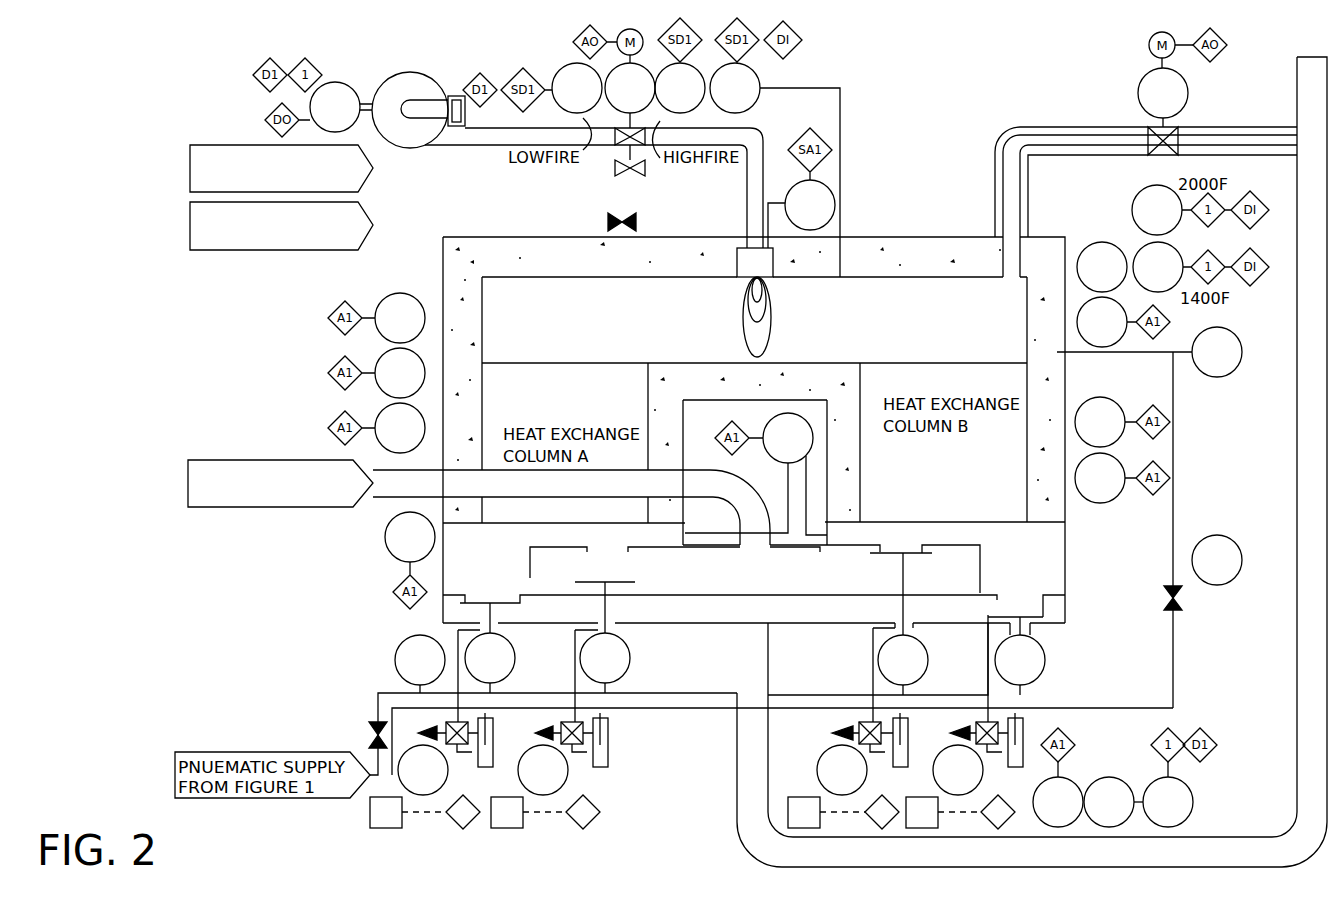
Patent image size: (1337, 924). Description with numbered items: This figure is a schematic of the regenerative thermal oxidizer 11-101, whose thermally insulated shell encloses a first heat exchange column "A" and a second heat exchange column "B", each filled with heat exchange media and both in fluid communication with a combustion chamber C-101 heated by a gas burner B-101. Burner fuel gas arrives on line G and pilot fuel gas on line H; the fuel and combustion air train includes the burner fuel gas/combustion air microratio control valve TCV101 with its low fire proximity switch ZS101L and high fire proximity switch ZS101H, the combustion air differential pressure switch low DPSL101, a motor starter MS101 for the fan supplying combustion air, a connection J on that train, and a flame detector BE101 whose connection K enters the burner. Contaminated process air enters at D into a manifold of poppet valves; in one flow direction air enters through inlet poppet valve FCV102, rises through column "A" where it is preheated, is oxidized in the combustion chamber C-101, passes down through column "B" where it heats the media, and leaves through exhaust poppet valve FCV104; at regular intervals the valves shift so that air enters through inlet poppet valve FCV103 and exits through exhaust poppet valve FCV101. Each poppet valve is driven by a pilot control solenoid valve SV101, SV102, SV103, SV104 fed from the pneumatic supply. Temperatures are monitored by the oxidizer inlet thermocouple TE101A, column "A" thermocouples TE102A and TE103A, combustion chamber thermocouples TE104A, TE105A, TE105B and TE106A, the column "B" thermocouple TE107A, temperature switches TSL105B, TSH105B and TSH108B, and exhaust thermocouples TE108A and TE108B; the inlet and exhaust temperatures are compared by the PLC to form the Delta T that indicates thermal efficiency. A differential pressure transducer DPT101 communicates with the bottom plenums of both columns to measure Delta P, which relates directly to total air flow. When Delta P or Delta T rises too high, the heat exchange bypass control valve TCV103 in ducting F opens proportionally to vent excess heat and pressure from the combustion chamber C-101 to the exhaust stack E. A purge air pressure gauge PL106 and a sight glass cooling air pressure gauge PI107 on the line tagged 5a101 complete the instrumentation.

The oxidizer 11-101 is at (754, 384).
The oxidizer burner B-101 is at (680, 262).
The combustion chamber C-101 is at (853, 317).
The burner fuel gas line from figure 1 G is at (615, 168).
The pilot fuel gas line from figure 1 H is at (747, 222).
The process air line from figure 1 D is at (479, 502).
The exhaust stack E is at (1032, 462).
The ducting F is at (1146, 202).
The flame sensor line K is at (753, 194).
The fuel gas train connection J is at (456, 111).
The motor starter MS101 is at (379, 110).
The microratio control valve low fire proximity switch ZS101L is at (577, 88).
The burner fuel gas/combustion air microratio control valve TCV101 is at (630, 88).
The microratio control valve high fire proximity switch ZS101H is at (680, 88).
The combustion air differential pressure switch low DPSL101 is at (775, 170).
The flame detector BE101 is at (801, 214).
The heat exchange bypass control valve TCV103 is at (1163, 111).
The oxidizer exhaust thermocouple secondary element TSH105B is at (1157, 210).
The combustion chamber port B thermocouple primary element TE105B is at (1102, 267).
The combustion chamber low temperature switch TSL105B is at (1158, 267).
The combustion chamber port A thermocouple secondary element TE105A is at (1065, 322).
The pressure tap line 5a101 is at (1149, 517).
The combustion chamber port B thermocouple secondary element TE106A is at (1065, 422).
The heat exchange column B thermocouple primary element TE107A is at (1100, 478).
The sight glass cooling air pressure gauge PI107 is at (1173, 560).
The combustion chamber port A thermocouple primary element TE104A is at (527, 318).
The heat exchange column A alternate thermocouple primary element TE103A is at (443, 373).
The heat exchange column A thermocouple primary element TE102A is at (483, 428).
The oxidizer inlet thermocouple primary element TE101A is at (410, 497).
The oxidizer plenum differential pressure transducer DPT101 is at (756, 474).
The purge air pressure gauge PL106 is at (420, 664).
The oxidizer column A exhaust poppet valve FCV101 is at (486, 662).
The oxidizer column A inlet poppet valve FCV102 is at (602, 652).
The oxidizer column B inlet poppet valve FCV103 is at (900, 637).
The oxidizer column B exhaust poppet valve FCV104 is at (1016, 669).
The column A exhaust poppet valve pilot control solenoid valve SV101 is at (431, 771).
The column A inlet poppet valve pilot control solenoid valve SV102 is at (549, 771).
The column B inlet poppet valve pilot control solenoid valve SV103 is at (848, 771).
The column B exhaust poppet valve pilot control solenoid valve SV104 is at (964, 771).
The oxidizer exhaust temperature thermocouple TE108A is at (1058, 794).
The oxidizer exhaust thermocouple primary element TE108B is at (1113, 802).
The combustion chamber high temperature switch TSH108B is at (1168, 794).